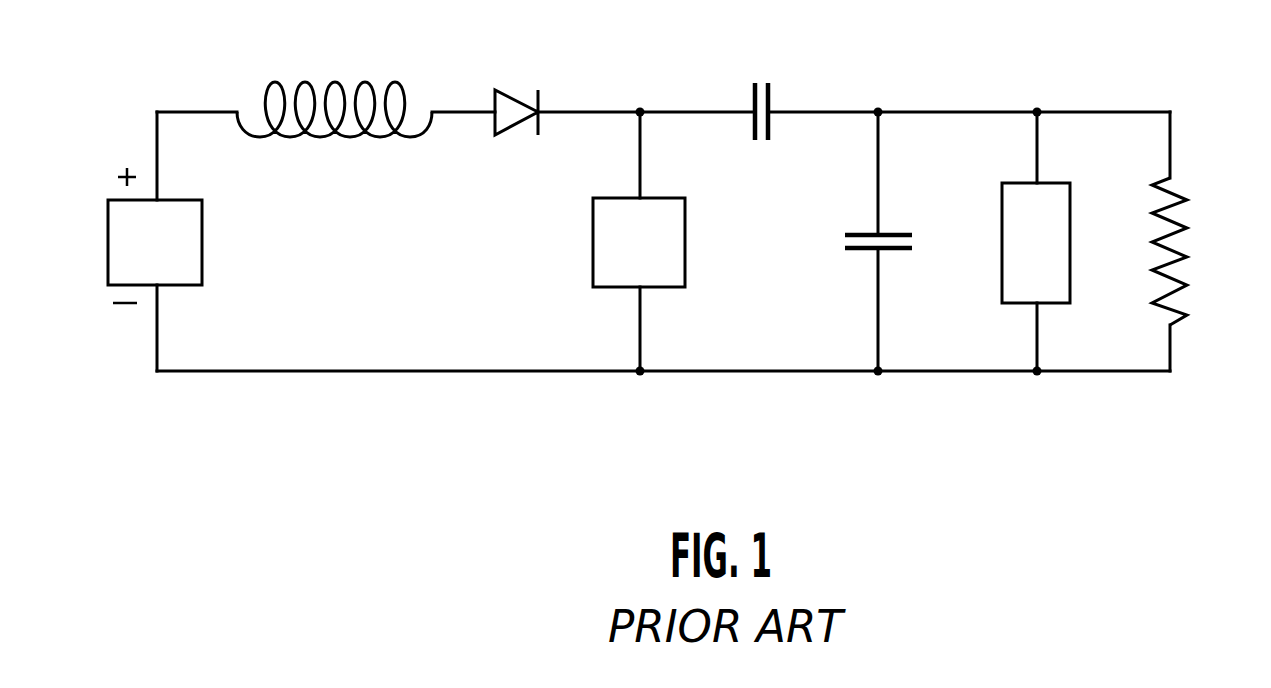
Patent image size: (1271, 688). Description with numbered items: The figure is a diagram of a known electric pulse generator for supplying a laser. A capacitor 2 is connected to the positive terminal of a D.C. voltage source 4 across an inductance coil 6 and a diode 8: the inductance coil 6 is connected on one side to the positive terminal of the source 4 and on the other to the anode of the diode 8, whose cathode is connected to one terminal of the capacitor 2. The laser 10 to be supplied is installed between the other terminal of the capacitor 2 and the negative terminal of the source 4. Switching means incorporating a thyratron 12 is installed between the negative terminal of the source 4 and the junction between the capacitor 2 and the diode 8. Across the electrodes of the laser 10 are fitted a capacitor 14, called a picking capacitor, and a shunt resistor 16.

The capacitor 2 is at (773, 88).
The D.C. voltage source 4 is at (190, 262).
The inductance coil 6 is at (308, 82).
The diode 8 is at (518, 110).
The laser 10 is at (1013, 254).
The thyratron 12 is at (600, 264).
The picking capacitor 14 is at (845, 250).
The shunt resistor 16 is at (1178, 265).